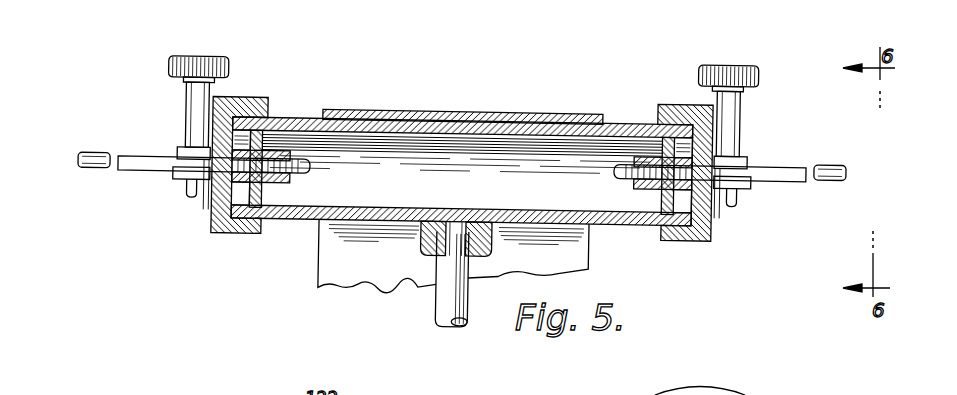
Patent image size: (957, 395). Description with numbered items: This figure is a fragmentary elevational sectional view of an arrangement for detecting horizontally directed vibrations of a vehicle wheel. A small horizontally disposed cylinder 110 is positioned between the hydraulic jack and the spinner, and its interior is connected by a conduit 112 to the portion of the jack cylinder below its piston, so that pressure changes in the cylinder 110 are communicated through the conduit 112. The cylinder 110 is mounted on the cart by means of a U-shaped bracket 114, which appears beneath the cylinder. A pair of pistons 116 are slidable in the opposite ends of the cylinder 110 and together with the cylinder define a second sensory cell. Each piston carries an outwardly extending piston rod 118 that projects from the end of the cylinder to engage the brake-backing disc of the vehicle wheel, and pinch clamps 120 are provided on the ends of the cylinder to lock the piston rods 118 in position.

The cylinder 110 is at (363, 218).
The conduit 112 is at (453, 302).
The U-shaped bracket 114 is at (593, 263).
The pistons 116 is at (298, 115).
The piston rod 118 is at (133, 158).
The pinch clamps 120 is at (180, 150).